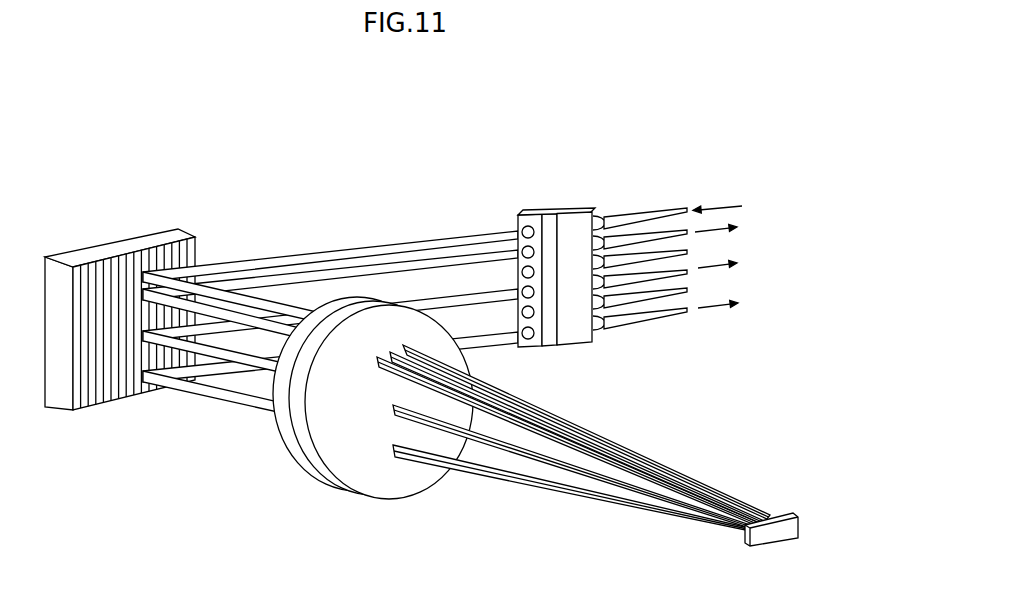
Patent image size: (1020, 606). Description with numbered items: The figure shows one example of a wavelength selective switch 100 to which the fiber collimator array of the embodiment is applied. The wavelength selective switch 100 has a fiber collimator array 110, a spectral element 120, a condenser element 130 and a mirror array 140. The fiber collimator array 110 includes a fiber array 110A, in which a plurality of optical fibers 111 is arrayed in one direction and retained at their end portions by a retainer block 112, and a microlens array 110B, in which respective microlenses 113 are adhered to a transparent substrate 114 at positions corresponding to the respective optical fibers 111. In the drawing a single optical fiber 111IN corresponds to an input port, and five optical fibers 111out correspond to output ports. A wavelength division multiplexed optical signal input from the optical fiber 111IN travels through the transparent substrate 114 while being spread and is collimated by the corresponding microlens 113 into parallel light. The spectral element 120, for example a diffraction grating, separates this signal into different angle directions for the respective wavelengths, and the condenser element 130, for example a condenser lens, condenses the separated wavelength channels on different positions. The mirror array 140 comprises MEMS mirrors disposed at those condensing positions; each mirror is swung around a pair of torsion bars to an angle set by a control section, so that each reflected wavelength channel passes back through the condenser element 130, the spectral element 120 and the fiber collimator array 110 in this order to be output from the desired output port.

The wavelength selective switch 100 is at (322, 151).
The fiber collimator array 110 is at (601, 348).
The fiber array 110A is at (708, 167).
The microlens array 110B is at (563, 133).
The optical fibers 111 is at (659, 249).
The input-port optical fiber 111IN is at (645, 218).
The output-port optical fibers 111out is at (643, 308).
The retainer block 112 is at (560, 213).
The microlens 113 is at (517, 216).
The transparent substrate 114 is at (542, 212).
The spectral element 120 is at (163, 232).
The condenser element 130 is at (321, 481).
The mirror array 140 is at (777, 513).